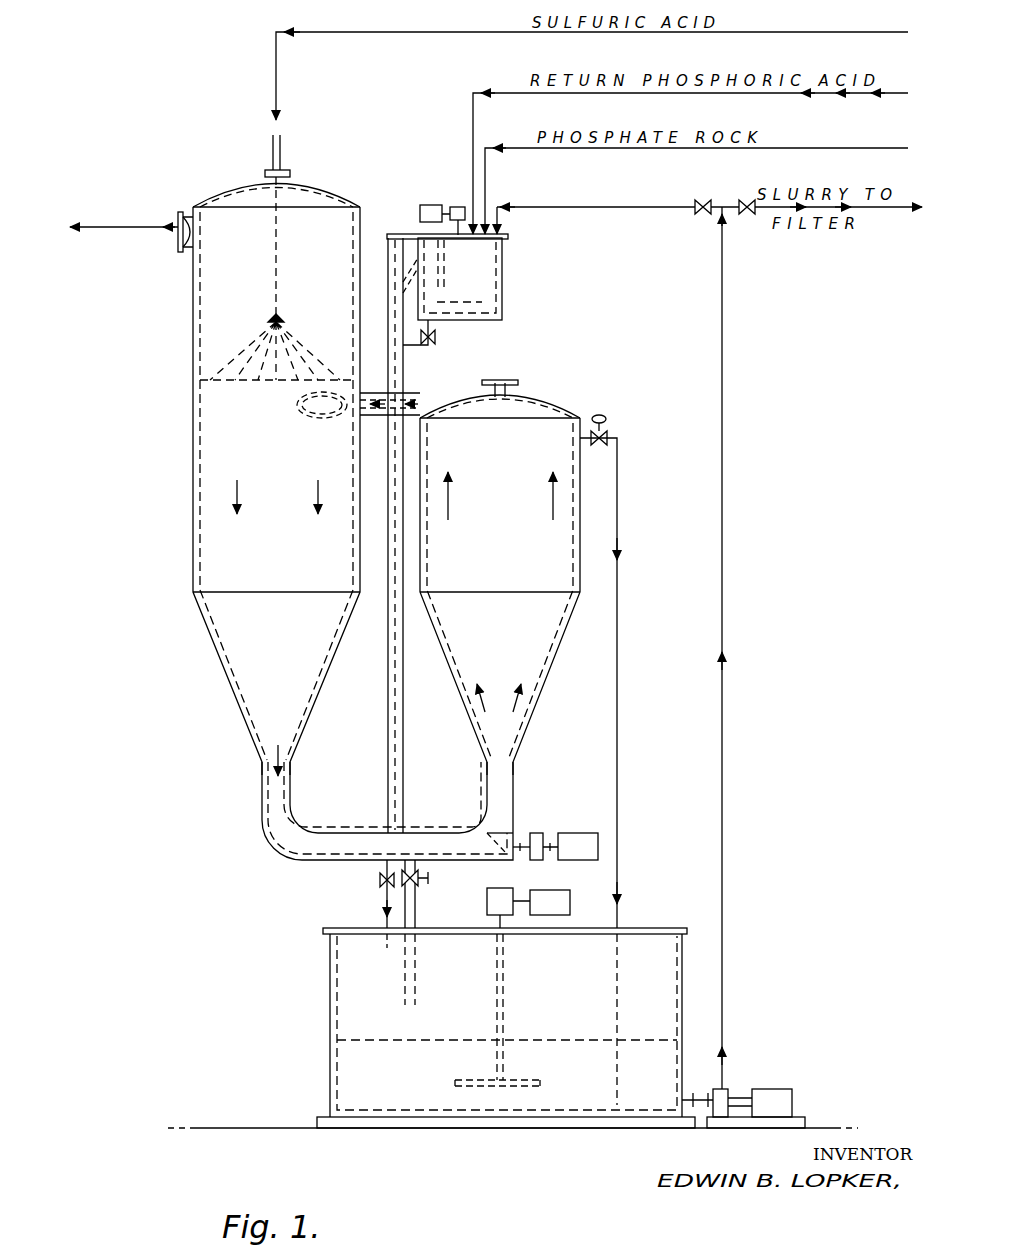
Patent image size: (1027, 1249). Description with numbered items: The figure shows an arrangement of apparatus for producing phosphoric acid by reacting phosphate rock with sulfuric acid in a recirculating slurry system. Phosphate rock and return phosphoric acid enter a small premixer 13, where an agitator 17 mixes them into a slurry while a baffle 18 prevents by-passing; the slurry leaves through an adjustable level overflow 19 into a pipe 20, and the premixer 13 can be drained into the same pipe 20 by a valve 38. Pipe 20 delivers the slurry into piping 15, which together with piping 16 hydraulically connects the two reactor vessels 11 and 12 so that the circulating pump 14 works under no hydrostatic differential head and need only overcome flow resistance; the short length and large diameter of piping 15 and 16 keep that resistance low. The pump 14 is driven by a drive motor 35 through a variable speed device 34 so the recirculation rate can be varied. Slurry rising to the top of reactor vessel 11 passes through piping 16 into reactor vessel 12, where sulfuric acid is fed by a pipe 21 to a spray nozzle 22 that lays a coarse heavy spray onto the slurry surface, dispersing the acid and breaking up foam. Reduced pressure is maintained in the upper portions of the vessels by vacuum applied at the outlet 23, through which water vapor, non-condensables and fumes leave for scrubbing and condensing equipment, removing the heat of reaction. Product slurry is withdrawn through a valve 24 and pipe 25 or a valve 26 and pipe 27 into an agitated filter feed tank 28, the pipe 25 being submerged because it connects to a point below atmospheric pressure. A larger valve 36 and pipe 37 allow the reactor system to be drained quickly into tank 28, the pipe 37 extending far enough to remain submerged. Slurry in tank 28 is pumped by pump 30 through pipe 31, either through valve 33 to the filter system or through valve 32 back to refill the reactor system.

The reactor vessel 11 is at (572, 526).
The reactor vessel 12 is at (215, 551).
The premixer 13 is at (502, 270).
The pump 14 is at (525, 826).
The piping 15 is at (350, 820).
The piping 16 is at (456, 394).
The agitator 17 is at (496, 306).
The baffle 18 is at (438, 250).
The adjustable level overflow 19 is at (400, 280).
The pipe 20 is at (403, 364).
The pipe 21 is at (283, 265).
The spray nozzle 22 is at (283, 318).
The outlet 23 is at (178, 246).
The valve 24 is at (606, 436).
The pipe 25 is at (617, 475).
The valve 26 is at (380, 880).
The pipe 27 is at (385, 901).
The filter feed tank 28 is at (345, 1008).
The pump 30 is at (742, 1086).
The pipe 31 is at (722, 616).
The valve 32 is at (700, 214).
The valve 33 is at (746, 214).
The variable speed device 34 is at (540, 840).
The drive motor 35 is at (598, 840).
The valve 36 is at (418, 886).
The pipe 37 is at (416, 916).
The valve 38 is at (436, 343).